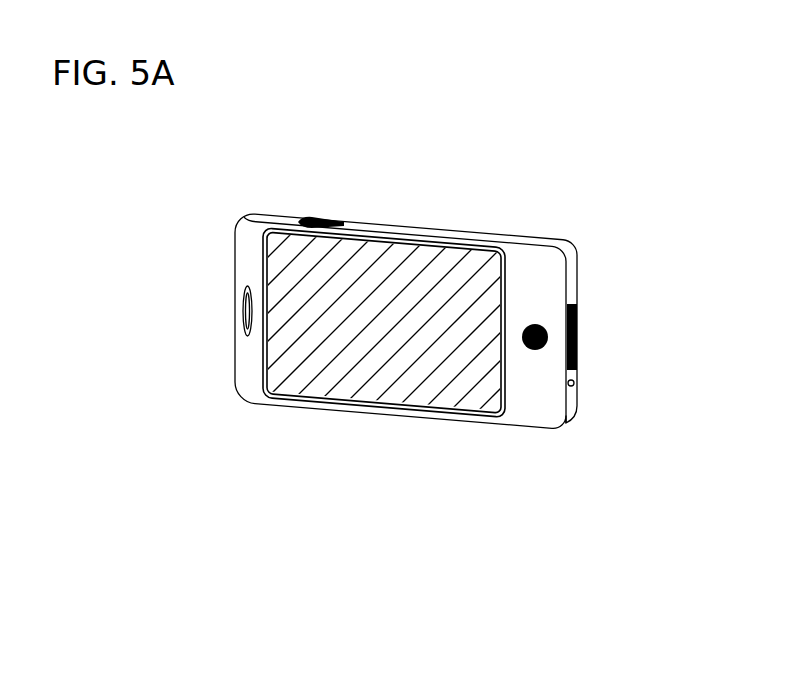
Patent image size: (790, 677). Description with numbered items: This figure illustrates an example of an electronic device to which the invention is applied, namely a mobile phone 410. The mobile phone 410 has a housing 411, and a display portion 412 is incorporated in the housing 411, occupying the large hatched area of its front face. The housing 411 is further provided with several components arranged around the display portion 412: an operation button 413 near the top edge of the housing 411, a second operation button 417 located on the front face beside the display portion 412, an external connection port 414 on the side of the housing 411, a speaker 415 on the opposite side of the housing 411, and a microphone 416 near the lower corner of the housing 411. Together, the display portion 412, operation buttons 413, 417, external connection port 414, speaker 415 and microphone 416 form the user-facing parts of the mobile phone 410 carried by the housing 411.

The mobile phone 410 is at (508, 194).
The housing 411 is at (532, 412).
The display portion 412 is at (285, 280).
The operation button 413 is at (329, 218).
The external connection port 414 is at (580, 337).
The speaker 415 is at (248, 318).
The microphone 416 is at (577, 401).
The operation button 417 is at (538, 322).